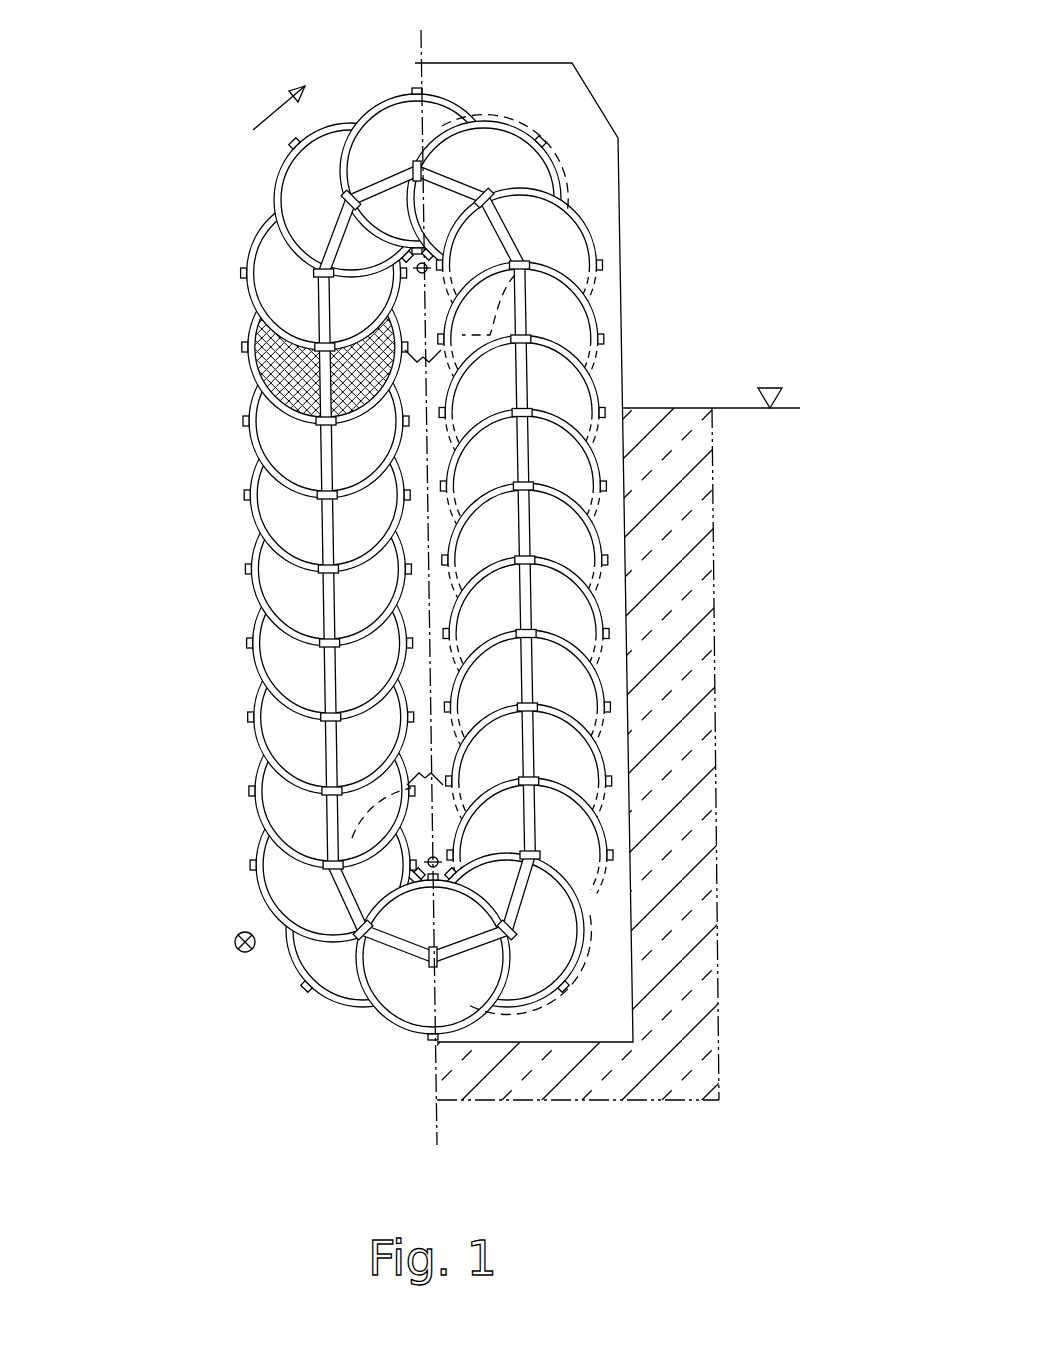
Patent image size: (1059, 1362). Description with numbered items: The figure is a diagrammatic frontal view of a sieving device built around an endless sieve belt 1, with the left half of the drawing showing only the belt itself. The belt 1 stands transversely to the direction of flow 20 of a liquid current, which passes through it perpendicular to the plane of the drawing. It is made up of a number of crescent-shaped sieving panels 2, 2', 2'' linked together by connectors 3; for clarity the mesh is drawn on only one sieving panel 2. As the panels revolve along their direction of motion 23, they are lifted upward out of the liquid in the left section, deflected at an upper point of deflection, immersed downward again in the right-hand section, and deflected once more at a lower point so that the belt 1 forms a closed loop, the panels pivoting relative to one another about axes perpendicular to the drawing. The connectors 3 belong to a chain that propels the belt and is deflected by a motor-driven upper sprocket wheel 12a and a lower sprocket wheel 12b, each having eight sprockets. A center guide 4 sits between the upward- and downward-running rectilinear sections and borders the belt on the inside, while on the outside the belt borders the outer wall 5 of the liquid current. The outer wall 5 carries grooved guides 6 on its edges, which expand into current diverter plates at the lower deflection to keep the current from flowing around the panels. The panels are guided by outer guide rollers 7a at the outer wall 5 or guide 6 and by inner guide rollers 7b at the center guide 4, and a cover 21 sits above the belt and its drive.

The endless sieve belt 1 is at (487, 628).
The sieving panel 2 is at (246, 347).
The sieving panel 2' is at (243, 273).
The sieving panel 2'' is at (282, 200).
The connectors 3 is at (327, 527).
The center guide 4 is at (438, 470).
The outer wall 5 is at (717, 745).
The grooved guides 6 is at (600, 935).
The outer guide rollers 7a is at (248, 645).
The inner guide rollers 7b is at (410, 570).
The upper sprocket wheel 12a is at (500, 300).
The lower sprocket wheel 12b is at (345, 832).
The direction of flow 20 is at (234, 943).
The cover 21 is at (567, 108).
The direction of motion 23 is at (292, 120).